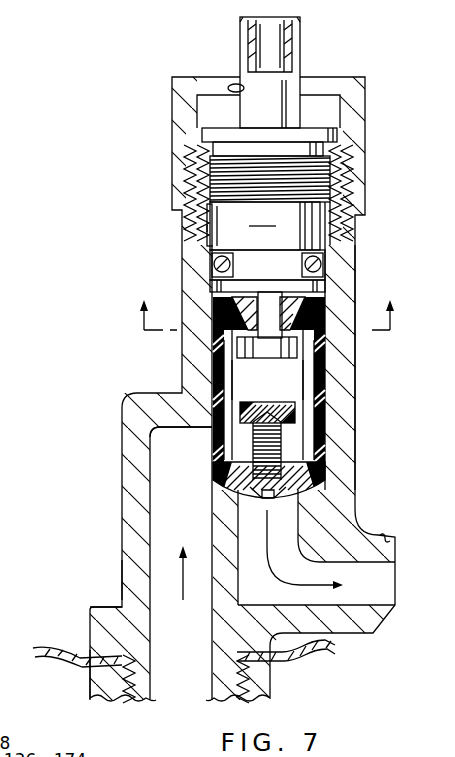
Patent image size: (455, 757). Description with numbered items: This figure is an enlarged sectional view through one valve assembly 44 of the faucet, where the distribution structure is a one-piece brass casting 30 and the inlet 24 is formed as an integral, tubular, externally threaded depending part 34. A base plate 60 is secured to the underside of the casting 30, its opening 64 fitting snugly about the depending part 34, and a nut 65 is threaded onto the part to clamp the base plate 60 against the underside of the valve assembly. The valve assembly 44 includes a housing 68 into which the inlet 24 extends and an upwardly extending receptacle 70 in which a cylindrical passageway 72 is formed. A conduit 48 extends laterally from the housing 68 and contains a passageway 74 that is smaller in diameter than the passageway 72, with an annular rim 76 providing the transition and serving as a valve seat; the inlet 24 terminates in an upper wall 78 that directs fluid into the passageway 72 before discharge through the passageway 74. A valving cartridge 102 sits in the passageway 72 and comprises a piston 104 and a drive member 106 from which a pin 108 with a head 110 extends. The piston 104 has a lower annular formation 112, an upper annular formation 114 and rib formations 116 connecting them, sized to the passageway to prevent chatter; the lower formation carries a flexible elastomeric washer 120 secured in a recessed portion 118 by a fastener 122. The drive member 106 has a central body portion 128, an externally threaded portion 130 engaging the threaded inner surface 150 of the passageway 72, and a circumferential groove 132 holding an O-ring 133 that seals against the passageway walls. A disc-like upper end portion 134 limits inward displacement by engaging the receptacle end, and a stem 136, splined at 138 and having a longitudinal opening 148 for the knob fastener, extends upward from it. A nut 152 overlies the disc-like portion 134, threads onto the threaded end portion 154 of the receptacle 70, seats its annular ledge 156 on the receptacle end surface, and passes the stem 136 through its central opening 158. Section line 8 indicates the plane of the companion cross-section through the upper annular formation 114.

The section line 8- 8 is at (269, 315).
The inlet 24 is at (173, 545).
The one-piece brass casting 30 is at (96, 572).
The depending part 34 is at (143, 694).
The valve assembly 44 is at (330, 423).
The conduit 48 is at (386, 536).
The base plate 60 is at (304, 651).
The opening 64 is at (92, 683).
The nut 65 is at (273, 680).
The housing 68 is at (127, 475).
The receptacle 70 is at (215, 262).
The cylindrical passageway 72 is at (326, 366).
The passageway 74 is at (383, 581).
The annular rim 76 is at (320, 488).
The upper wall 78 is at (199, 433).
The valving cartridge 102 is at (331, 282).
The piston 104 is at (210, 355).
The drive member 106 is at (207, 228).
The pin 108 is at (240, 287).
The head 110 is at (254, 358).
The lower annular formation 112 is at (323, 456).
The upper annular formation 114 is at (330, 300).
The rib formations 116 is at (177, 393).
The recessed portion 118 is at (214, 467).
The washer 120 is at (226, 490).
The fastener 122 is at (228, 516).
The central body portion 128 is at (265, 226).
The externally threaded portion 130 is at (186, 186).
The circumferential groove 132 is at (345, 224).
The O-ring 133 is at (350, 238).
The disc-like upper end portion 134 is at (345, 140).
The stem 136 is at (288, 88).
The splined portion 138 is at (300, 32).
The longitudinal opening 148 is at (243, 15).
The threaded inner surface 150 is at (332, 214).
The nut 152 is at (358, 100).
The threaded end portion 154 is at (202, 214).
The annular ledge 156 is at (200, 130).
The central opening 158 is at (228, 82).